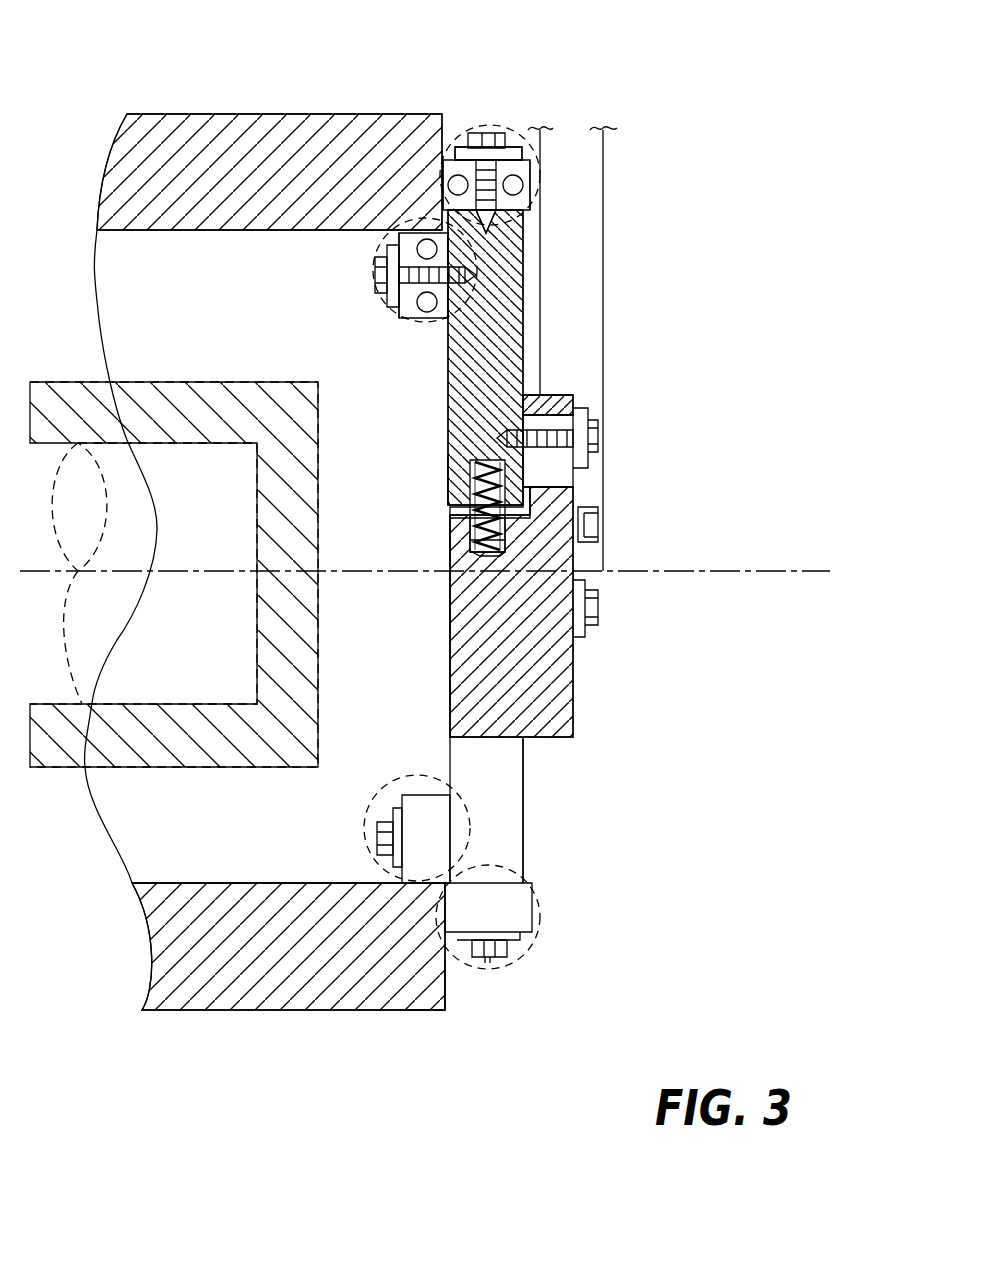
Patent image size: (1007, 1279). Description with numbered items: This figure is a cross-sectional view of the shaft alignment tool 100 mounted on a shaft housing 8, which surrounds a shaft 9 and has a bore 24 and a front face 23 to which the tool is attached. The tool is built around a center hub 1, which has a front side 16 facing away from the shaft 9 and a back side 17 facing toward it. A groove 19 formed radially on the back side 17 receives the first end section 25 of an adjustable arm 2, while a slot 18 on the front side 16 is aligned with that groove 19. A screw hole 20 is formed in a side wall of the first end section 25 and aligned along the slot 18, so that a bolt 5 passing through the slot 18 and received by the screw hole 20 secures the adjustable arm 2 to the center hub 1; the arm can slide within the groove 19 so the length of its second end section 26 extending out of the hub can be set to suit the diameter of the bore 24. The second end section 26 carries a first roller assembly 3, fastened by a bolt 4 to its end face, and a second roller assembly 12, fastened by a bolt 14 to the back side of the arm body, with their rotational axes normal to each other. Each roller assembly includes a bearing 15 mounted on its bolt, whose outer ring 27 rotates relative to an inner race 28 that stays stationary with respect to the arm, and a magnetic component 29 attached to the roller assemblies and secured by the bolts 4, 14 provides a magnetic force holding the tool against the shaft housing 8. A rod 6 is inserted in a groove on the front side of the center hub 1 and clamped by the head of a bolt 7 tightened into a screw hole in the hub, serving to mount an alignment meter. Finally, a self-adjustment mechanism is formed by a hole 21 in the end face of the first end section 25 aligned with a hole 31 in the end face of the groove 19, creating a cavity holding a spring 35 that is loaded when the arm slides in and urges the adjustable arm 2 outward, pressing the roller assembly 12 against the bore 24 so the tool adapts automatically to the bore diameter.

The center hub 1 is at (562, 688).
The adjustable arm 2 is at (452, 396).
The first roller assembly 3 is at (438, 150).
The bolt 4 is at (478, 140).
The bolt 5 is at (598, 433).
The rod 6 is at (603, 300).
The bolt 7 is at (600, 527).
The shaft housing 8 is at (318, 995).
The shaft 9 is at (240, 382).
The second roller assembly 12 is at (392, 328).
The bolt 14 is at (378, 272).
The bearing 15 is at (516, 140).
The front side 16 is at (576, 650).
The back side 17 is at (448, 620).
The slot 18 is at (574, 470).
The groove 19 is at (460, 512).
The screw hole 20 is at (510, 437).
The hole 21 is at (477, 484).
The front face 23 is at (448, 1013).
The bore 24 is at (262, 883).
The first end section 25 is at (458, 490).
The second end section 26 is at (514, 255).
The outer ring 27 is at (548, 150).
The inner race 28 is at (495, 133).
The magnetic component 29 is at (462, 138).
The hole 31 is at (503, 543).
The spring 35 is at (468, 536).
The shaft alignment tool 100 is at (752, 368).